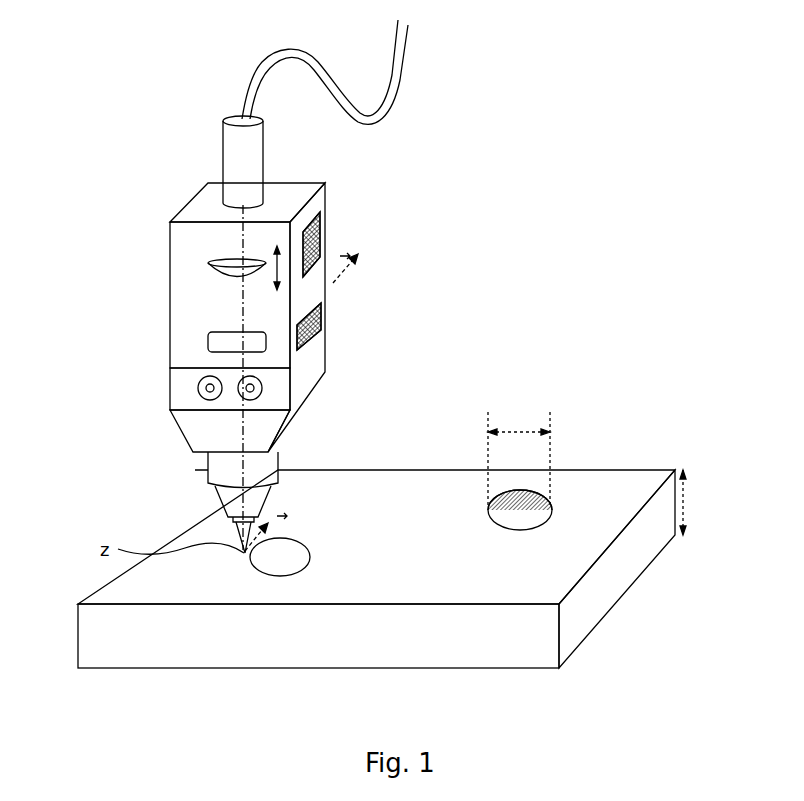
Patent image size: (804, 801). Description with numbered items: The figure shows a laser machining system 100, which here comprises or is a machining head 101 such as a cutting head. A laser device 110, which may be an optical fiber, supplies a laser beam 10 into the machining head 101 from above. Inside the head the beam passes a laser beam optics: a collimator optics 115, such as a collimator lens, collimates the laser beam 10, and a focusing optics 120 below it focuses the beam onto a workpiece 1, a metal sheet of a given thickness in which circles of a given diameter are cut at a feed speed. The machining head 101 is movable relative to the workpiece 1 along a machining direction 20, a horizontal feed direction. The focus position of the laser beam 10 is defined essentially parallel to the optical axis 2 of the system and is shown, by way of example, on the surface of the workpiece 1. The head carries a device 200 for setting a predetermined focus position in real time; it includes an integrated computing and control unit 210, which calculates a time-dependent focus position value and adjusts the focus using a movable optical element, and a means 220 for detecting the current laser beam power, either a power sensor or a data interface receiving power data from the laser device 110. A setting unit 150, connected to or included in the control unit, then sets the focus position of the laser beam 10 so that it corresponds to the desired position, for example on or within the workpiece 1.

The laser machining system 100 is at (645, 55).
The laser device 110 is at (223, 147).
The machining head 101 is at (170, 300).
The device for setting a focus position 200 is at (340, 202).
The integrated computing and control unit 210 is at (320, 229).
The means for detecting the current laser beam power 220 is at (322, 320).
The setting unit 150 is at (277, 248).
The collimator optics 115 is at (208, 268).
The focusing optics 120 is at (208, 342).
The optical axis 2 is at (245, 428).
The machining direction 20 is at (348, 273).
The laser beam 10 is at (243, 531).
The workpiece 1 is at (596, 628).